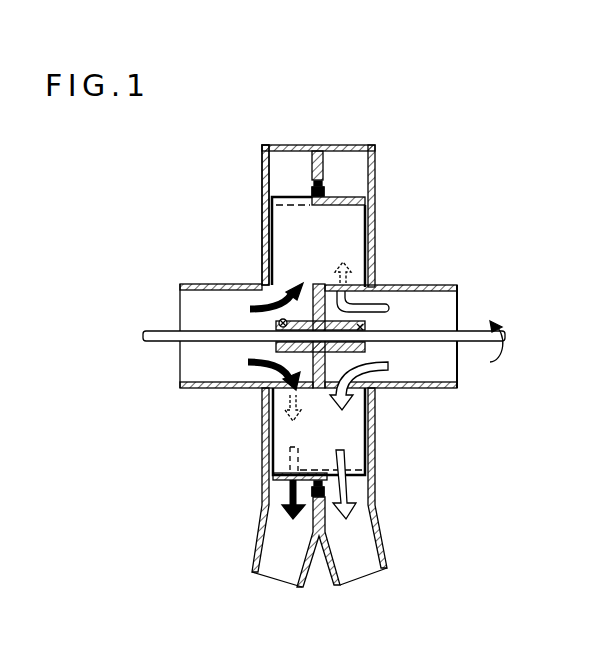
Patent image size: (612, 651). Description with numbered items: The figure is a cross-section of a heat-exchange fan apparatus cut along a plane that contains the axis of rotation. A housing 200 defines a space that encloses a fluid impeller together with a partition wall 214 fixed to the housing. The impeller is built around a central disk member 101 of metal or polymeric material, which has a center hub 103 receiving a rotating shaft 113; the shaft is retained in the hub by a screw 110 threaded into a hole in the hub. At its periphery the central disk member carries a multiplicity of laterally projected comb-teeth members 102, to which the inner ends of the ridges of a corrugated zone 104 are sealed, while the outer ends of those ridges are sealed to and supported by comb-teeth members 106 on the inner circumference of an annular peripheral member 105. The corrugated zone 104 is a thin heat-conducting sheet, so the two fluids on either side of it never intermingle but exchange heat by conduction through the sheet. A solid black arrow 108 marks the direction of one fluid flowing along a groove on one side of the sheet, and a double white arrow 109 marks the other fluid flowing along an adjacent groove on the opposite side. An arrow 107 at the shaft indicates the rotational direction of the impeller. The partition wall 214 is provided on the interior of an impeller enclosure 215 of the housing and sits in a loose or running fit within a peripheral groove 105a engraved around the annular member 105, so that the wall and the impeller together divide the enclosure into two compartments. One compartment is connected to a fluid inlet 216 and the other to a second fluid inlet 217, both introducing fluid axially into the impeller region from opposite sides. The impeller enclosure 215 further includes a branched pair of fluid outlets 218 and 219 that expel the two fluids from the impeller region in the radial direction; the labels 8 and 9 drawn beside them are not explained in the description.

The housing 200 is at (428, 105).
The impeller enclosure 215 is at (268, 145).
The partition wall 214 is at (330, 147).
The annular peripheral member 105 is at (326, 196).
The peripheral groove 105a is at (312, 196).
The comb-teeth members 106 is at (368, 204).
The corrugated zone 104 is at (372, 226).
The comb-teeth members 102 is at (353, 277).
The fluid inlet 216 is at (186, 297).
The fluid inlet 217 is at (388, 316).
The center hub 103 is at (425, 288).
The rotating shaft 113 is at (470, 335).
The screw 110 is at (278, 320).
The arrow indicating rotational direction 107 is at (492, 354).
The solid black arrow 108 is at (262, 388).
The central disk member 101 is at (380, 383).
The double white arrow 109 is at (370, 400).
The outlet 8 is at (265, 518).
The outlet 9 is at (372, 515).
The fluid outlet 218 is at (272, 572).
The fluid outlet 219 is at (366, 572).